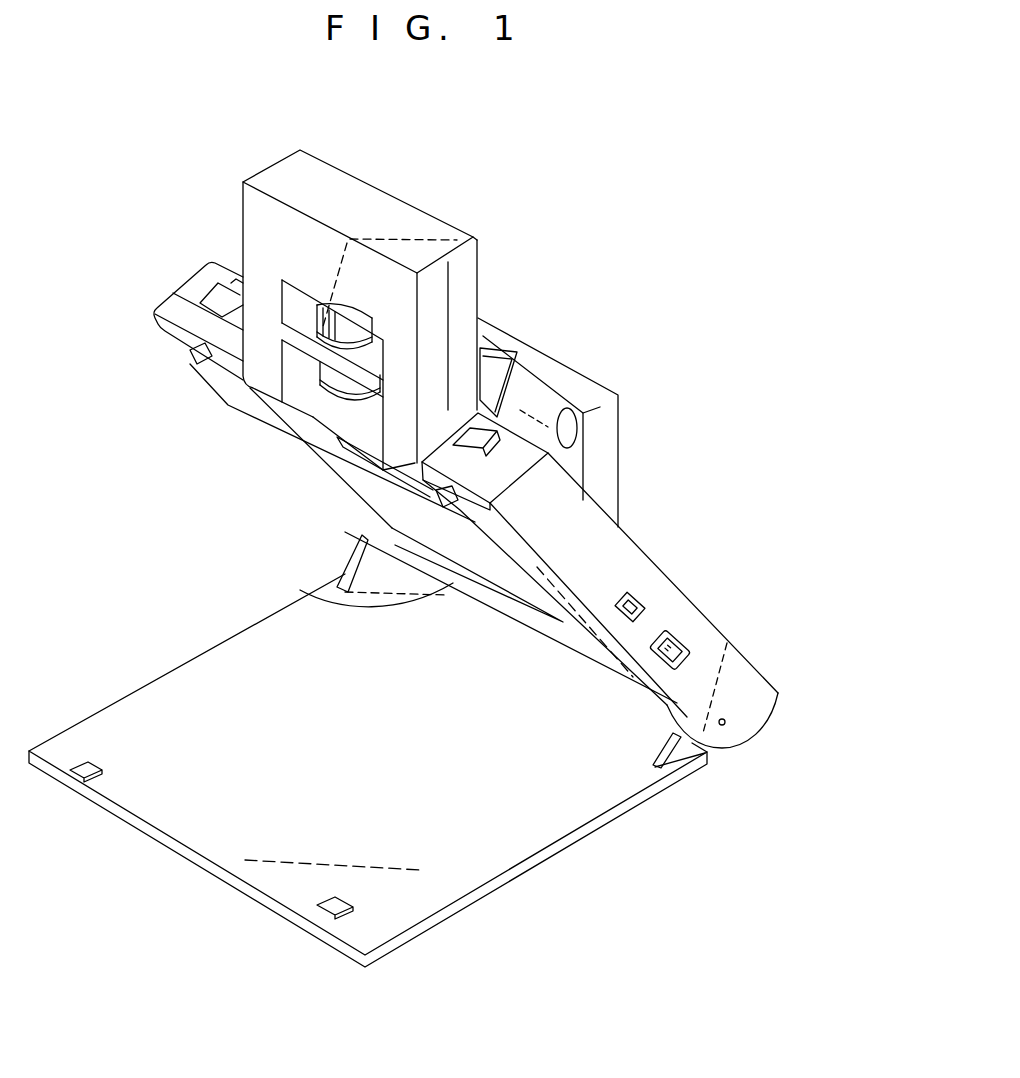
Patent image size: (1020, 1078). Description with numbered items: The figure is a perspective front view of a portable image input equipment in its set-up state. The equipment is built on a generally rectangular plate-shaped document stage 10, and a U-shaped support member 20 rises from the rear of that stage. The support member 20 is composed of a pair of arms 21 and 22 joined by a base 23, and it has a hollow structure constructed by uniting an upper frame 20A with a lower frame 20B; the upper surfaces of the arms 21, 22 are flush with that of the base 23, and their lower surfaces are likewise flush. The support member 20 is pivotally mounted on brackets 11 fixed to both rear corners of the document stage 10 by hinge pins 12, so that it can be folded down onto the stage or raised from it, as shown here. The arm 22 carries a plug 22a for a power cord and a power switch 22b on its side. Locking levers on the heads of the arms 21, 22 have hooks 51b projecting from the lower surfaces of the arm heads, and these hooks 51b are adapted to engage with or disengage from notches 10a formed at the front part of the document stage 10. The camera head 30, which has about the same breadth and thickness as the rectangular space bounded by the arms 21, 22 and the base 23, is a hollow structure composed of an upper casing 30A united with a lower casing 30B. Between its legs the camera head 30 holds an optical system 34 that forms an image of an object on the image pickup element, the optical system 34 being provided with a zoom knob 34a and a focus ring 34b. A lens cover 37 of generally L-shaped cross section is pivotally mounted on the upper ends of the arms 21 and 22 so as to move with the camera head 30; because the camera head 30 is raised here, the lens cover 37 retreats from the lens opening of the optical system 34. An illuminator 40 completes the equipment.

The document stage 10 is at (368, 796).
The notches 10a is at (88, 778).
The brackets 11 is at (347, 532).
The hinge pins 12 is at (722, 726).
The U-shaped support member 20 is at (505, 560).
The upper frame 20A is at (763, 703).
The lower frame 20B is at (735, 730).
The arm 21 is at (190, 328).
The arm 22 is at (628, 558).
The plug 22a is at (692, 650).
The power switch 22b is at (647, 603).
The base 23 is at (300, 590).
The camera head 30 is at (464, 304).
The upper casing 30A is at (378, 205).
The lower casing 30B is at (262, 180).
The optical system 34 is at (362, 369).
The zoom knob 34a is at (328, 362).
The focus ring 34b is at (337, 410).
The lens cover 37 is at (502, 350).
The illuminator 40 is at (585, 372).
The hooks 51b is at (197, 365).